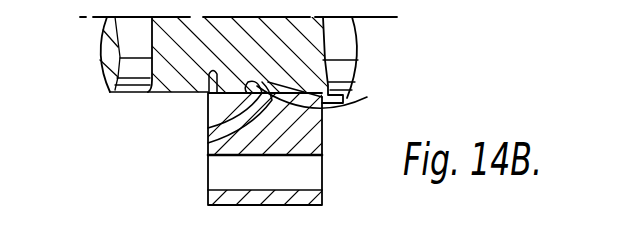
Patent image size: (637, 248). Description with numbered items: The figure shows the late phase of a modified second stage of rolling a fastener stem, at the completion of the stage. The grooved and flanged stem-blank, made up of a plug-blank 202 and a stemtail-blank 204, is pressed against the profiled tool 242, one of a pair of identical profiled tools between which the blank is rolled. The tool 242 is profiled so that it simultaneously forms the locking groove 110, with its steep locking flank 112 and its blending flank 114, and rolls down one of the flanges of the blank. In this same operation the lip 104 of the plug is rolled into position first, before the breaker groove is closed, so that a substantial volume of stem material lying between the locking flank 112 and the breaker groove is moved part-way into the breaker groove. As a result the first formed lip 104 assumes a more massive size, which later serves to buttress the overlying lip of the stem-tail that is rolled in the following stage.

The lip 104 is at (208, 92).
The locking groove 110 is at (208, 145).
The locking flank 112 is at (210, 129).
The blending flank 114 is at (352, 104).
The plug-blank 202 is at (358, 56).
The stemtail-blank 204 is at (100, 58).
The profiled tool 242 is at (322, 132).